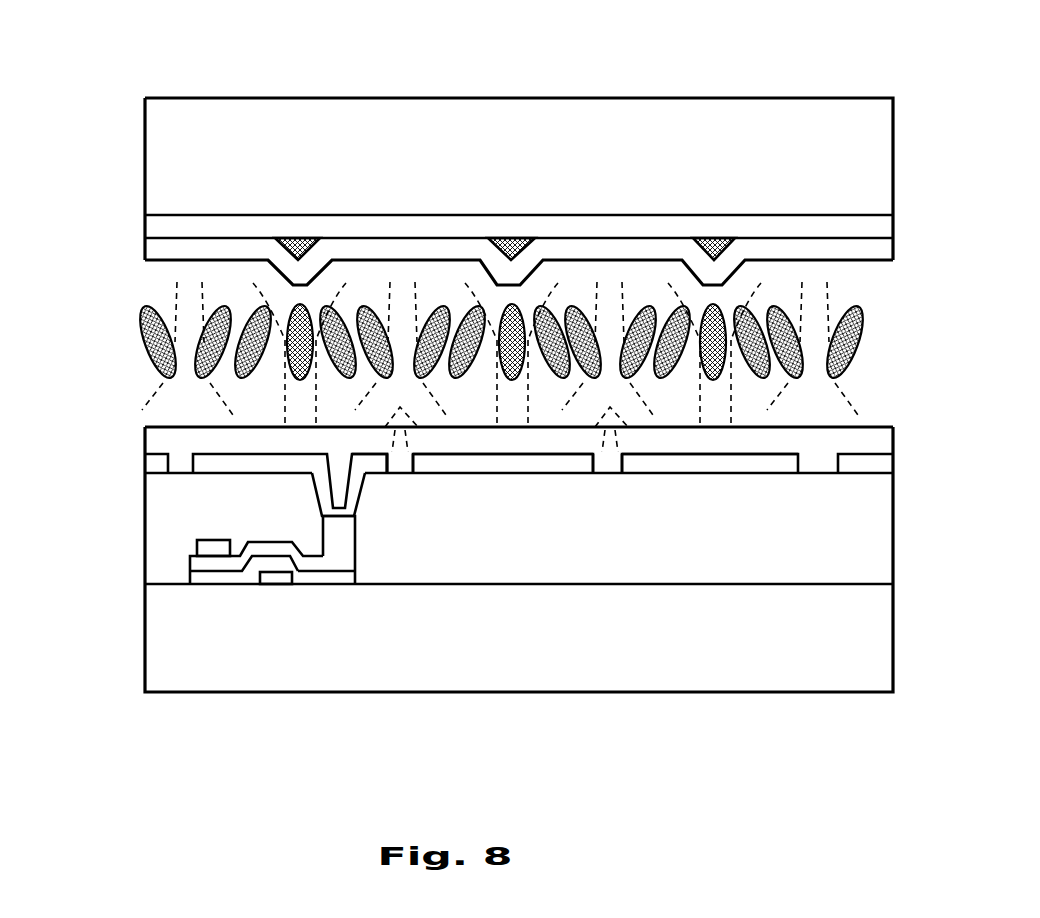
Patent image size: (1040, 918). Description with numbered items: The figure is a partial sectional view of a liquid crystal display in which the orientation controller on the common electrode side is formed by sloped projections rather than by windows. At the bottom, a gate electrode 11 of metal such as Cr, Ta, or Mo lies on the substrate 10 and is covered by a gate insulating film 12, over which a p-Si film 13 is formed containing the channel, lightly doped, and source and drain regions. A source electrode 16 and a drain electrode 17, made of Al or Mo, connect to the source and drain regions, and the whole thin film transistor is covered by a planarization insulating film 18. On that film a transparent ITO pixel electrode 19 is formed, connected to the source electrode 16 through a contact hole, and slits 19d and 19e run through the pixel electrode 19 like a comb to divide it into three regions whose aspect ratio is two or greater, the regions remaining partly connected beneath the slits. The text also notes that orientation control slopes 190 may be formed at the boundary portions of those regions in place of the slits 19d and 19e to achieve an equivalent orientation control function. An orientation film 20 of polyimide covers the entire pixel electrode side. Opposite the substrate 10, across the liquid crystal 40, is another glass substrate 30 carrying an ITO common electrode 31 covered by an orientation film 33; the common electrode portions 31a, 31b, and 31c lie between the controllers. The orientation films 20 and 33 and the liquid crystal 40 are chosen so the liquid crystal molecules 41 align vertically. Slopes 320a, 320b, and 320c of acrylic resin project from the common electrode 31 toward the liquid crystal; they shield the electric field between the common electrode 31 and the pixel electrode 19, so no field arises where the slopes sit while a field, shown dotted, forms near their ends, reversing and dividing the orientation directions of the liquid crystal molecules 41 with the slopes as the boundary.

The substrate 10 is at (882, 612).
The gate electrode 11 is at (272, 584).
The gate insulating film 12 is at (328, 572).
The p-Si film 13 is at (190, 563).
The source electrode 16 is at (342, 537).
The drain electrode 17 is at (207, 547).
The planarization insulating film 18 is at (885, 487).
The pixel electrode 19 is at (207, 455).
The slit 19d is at (405, 467).
The slit 19e is at (610, 472).
The orientation control slope 190 is at (412, 455).
The orientation film 20 is at (885, 442).
The glass substrate 30 is at (887, 137).
The common electrode 31 is at (192, 225).
The pixel electrode portion 31a is at (375, 462).
The pixel electrode portion 31b is at (572, 463).
The pixel electrode portion 31c is at (768, 463).
The orientation film 33 is at (885, 250).
The slope 320a is at (307, 240).
The slope 320b is at (514, 240).
The slope 320c is at (712, 240).
The liquid crystal 40 is at (873, 403).
The liquid crystal molecules 41 is at (863, 330).